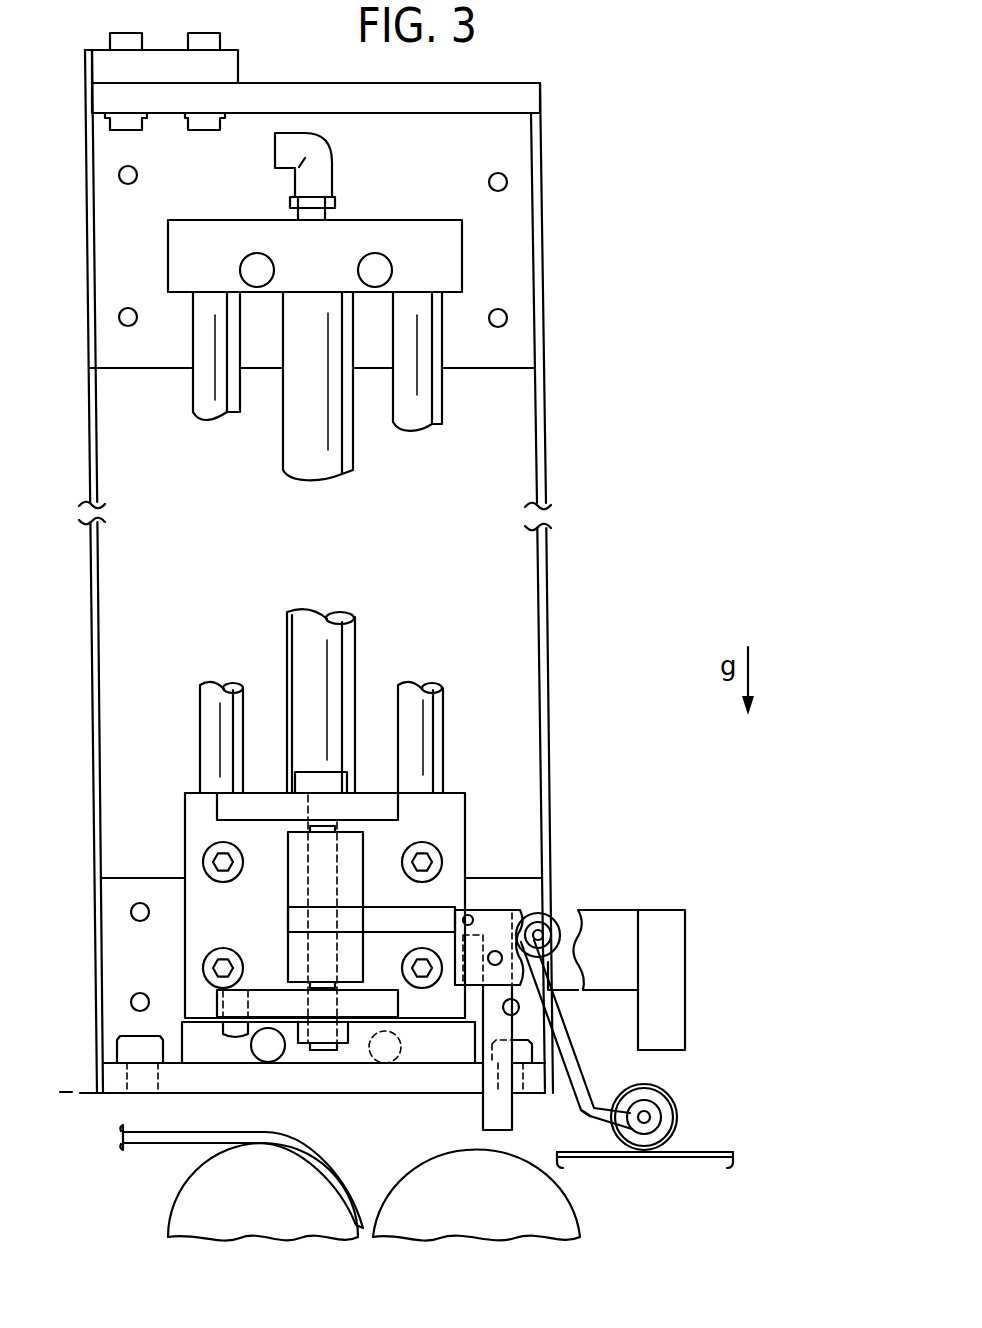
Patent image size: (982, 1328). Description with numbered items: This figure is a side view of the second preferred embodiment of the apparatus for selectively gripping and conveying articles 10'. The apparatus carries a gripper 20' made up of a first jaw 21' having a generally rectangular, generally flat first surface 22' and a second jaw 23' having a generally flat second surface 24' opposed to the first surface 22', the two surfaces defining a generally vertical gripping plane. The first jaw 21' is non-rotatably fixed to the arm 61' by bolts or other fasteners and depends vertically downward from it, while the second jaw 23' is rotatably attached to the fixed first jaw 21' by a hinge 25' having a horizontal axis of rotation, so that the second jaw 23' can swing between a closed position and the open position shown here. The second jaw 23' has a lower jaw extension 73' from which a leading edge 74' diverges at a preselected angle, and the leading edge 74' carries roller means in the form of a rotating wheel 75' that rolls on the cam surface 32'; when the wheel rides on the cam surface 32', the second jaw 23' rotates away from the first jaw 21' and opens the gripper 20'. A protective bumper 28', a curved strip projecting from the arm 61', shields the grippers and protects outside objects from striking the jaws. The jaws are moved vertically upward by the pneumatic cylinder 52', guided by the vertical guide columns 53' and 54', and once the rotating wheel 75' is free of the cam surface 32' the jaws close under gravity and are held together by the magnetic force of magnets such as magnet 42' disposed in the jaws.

The apparatus for selectively gripping and conveying articles 10' is at (355, 563).
The gripper 20' is at (574, 920).
The first jaw 21' is at (465, 1033).
The first surface 22' is at (593, 951).
The second jaw 23' is at (573, 1028).
The second surface 24' is at (520, 1057).
The hinge 25' is at (564, 898).
The protective bumper 28' is at (695, 980).
The cam surface 32' is at (690, 1151).
The magnet 42' is at (564, 1131).
The pneumatic cylinder 52' is at (365, 701).
The vertical guide column 53' is at (455, 724).
The vertical guide column 54' is at (184, 723).
The arm 61' is at (352, 907).
The lower jaw extension 73' is at (611, 1080).
The leading edge 74' is at (677, 1106).
The rotating wheel 75' is at (665, 1191).